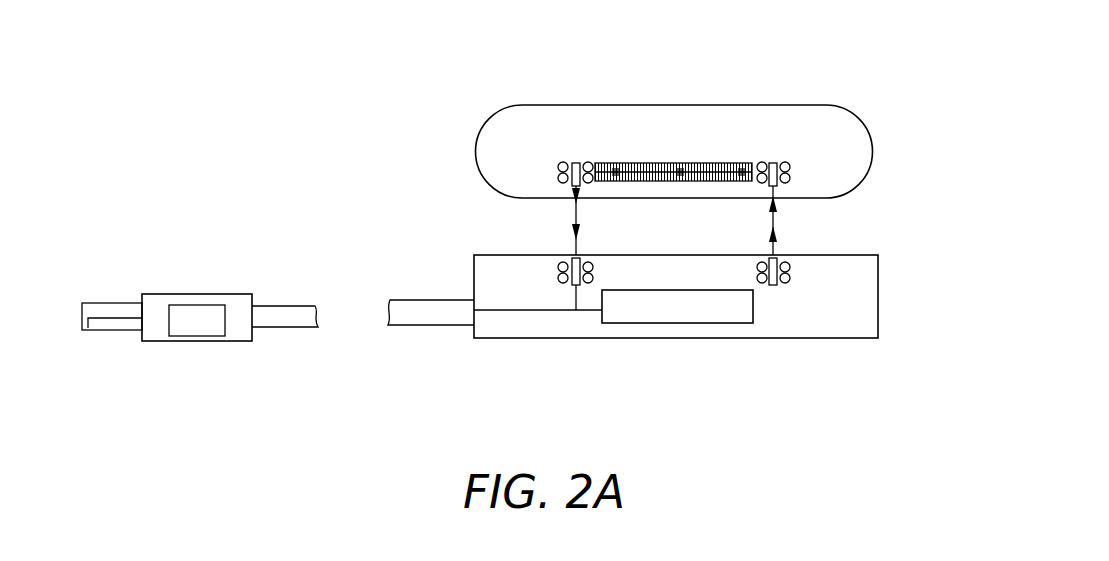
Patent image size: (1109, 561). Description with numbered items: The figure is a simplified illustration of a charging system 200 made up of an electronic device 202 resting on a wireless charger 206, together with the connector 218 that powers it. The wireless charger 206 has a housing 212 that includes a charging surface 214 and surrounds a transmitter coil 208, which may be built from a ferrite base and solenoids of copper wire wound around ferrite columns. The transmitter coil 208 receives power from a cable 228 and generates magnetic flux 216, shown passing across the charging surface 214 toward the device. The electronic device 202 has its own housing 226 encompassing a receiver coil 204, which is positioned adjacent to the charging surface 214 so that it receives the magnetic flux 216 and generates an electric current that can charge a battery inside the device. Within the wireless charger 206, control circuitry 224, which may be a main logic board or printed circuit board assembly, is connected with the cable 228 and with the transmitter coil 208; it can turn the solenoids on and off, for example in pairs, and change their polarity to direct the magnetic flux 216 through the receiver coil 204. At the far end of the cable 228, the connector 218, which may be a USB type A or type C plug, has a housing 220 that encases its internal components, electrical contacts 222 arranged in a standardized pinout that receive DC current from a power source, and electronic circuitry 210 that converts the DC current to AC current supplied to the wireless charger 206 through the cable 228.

The charging system 200 is at (306, 98).
The electronic device 202 is at (880, 110).
The receiver coil 204 is at (548, 174).
The wireless charger 206 is at (436, 280).
The transmitter coil 208 is at (795, 272).
The electronic circuitry 210 is at (197, 320).
The housing 212 is at (703, 338).
The charging surface 214 is at (873, 255).
The magnetic flux 216 is at (573, 216).
The connector 218 is at (188, 205).
The housing 220 is at (158, 293).
The electrical contacts 222 is at (113, 322).
The control circuitry 224 is at (677, 306).
The housing 226 is at (510, 107).
The cable 228 is at (291, 306).